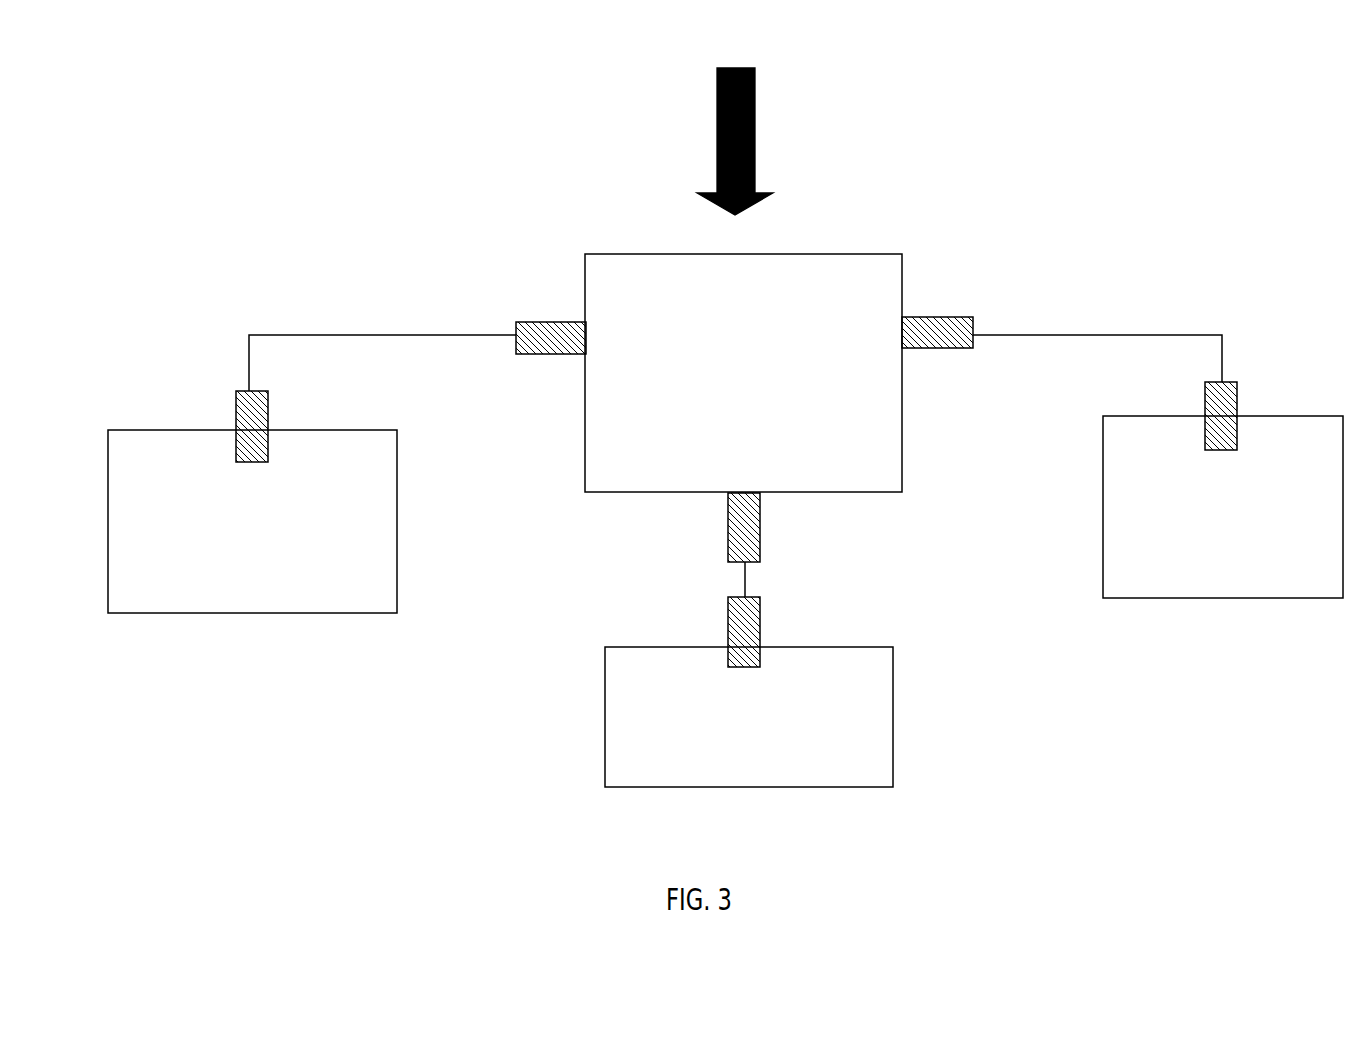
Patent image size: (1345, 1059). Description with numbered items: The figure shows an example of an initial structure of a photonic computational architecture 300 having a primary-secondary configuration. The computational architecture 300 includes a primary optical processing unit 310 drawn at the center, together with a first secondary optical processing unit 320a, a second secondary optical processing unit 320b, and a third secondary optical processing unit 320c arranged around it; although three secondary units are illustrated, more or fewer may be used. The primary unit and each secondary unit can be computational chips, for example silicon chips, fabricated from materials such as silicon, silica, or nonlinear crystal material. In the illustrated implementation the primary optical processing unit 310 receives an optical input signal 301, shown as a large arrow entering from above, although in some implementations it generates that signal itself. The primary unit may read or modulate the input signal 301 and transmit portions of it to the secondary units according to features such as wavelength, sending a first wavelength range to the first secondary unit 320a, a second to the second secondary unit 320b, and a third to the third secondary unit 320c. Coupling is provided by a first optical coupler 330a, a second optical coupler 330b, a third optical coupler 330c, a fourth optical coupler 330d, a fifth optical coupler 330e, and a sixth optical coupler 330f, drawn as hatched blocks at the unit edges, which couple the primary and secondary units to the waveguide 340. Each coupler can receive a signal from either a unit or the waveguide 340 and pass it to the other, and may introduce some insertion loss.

The photonic computational architecture 300 is at (442, 170).
The optical input signal 301 is at (765, 94).
The primary optical processing unit 310 is at (727, 421).
The first secondary optical processing unit 320a is at (1199, 587).
The second secondary optical processing unit 320b is at (722, 777).
The third secondary optical processing unit 320c is at (278, 577).
The first optical coupler 330a is at (955, 296).
The second optical coupler 330b is at (702, 546).
The third optical coupler 330c is at (545, 290).
The fourth optical coupler 330d is at (1255, 377).
The fifth optical coupler 330e is at (780, 616).
The sixth optical coupler 330f is at (216, 399).
The waveguide 340 is at (319, 316).